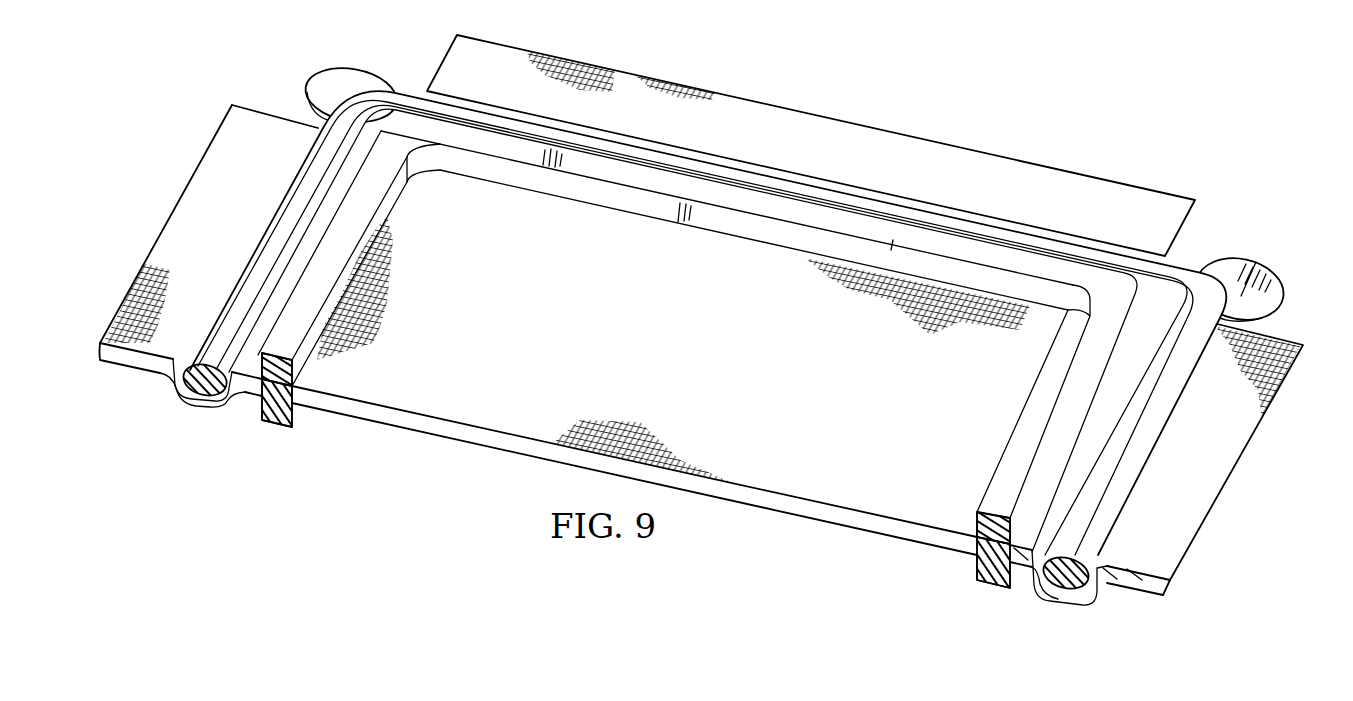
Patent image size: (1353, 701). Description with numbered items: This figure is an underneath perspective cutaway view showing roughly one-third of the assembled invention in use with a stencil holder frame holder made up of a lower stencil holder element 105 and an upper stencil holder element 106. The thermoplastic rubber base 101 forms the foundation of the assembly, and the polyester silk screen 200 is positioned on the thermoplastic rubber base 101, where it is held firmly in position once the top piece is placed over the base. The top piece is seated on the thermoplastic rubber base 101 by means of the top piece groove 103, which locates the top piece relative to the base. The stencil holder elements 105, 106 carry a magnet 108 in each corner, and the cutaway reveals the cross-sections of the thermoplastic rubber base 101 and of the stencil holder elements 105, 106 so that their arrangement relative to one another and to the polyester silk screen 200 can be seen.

The thermoplastic rubber base 101 is at (410, 86).
The top piece groove 103 is at (212, 403).
The lower stencil holder element 105 is at (565, 206).
The upper stencil holder element 106 is at (309, 414).
The magnet 108 is at (430, 178).
The polyester silk screen 200 is at (857, 124).